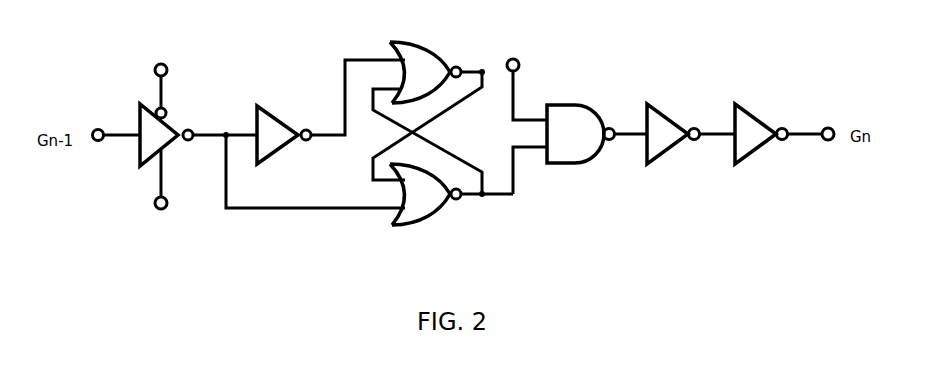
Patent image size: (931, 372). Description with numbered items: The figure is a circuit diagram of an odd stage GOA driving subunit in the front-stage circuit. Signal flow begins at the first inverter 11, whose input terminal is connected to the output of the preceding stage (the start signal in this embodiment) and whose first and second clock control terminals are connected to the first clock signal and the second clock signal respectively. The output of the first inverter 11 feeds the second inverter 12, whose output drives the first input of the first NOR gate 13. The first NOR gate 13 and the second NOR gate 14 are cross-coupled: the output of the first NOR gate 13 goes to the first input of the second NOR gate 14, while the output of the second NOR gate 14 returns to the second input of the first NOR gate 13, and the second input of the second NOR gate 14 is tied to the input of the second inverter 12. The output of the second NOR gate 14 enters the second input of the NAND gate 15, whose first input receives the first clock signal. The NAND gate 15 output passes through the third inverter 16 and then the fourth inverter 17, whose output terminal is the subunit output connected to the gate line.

The first inverter 11 is at (138, 118).
The second inverter 12 is at (268, 105).
The first NOR gate 13 is at (442, 52).
The second NOR gate 14 is at (425, 220).
The NAND gate 15 is at (580, 103).
The third inverter 16 is at (672, 108).
The fourth inverter 17 is at (753, 110).